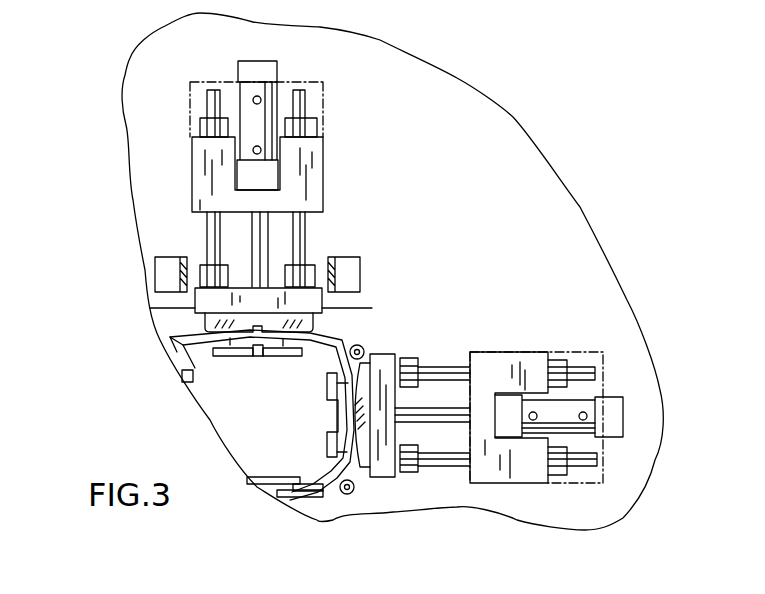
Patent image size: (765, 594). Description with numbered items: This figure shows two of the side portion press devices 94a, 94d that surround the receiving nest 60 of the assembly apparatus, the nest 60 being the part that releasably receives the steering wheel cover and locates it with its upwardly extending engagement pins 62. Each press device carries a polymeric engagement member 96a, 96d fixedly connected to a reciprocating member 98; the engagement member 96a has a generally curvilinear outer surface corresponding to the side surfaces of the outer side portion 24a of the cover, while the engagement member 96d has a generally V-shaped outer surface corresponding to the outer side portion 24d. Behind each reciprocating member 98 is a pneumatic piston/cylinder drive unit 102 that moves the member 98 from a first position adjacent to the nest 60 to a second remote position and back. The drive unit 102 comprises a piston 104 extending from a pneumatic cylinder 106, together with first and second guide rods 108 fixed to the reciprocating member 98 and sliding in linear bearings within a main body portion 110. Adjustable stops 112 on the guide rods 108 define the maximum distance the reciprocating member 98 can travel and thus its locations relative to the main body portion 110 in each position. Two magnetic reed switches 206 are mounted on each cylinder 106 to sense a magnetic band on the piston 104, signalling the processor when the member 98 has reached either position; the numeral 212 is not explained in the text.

The first outer side portion 24a is at (346, 438).
The fourth outer side portion 24d is at (248, 333).
The receiving nest 60 is at (381, 362).
The engagement pins 62 is at (360, 345).
The side portion press device 94a is at (608, 346).
The side portion press device 94d is at (348, 150).
The polymeric engagement member 96a is at (364, 470).
The polymeric engagement member 96d is at (222, 321).
The reciprocating member 98 is at (200, 297).
The pneumatic piston/cylinder drive unit 102 is at (300, 58).
The piston 104 is at (253, 235).
The pneumatic cylinder 106 is at (258, 66).
The guide rods 108 is at (210, 106).
The main body portion 110 is at (320, 176).
The adjustable stops 112 is at (205, 125).
The magnetic reed switches 206 is at (254, 147).
The nut 212 is at (560, 477).